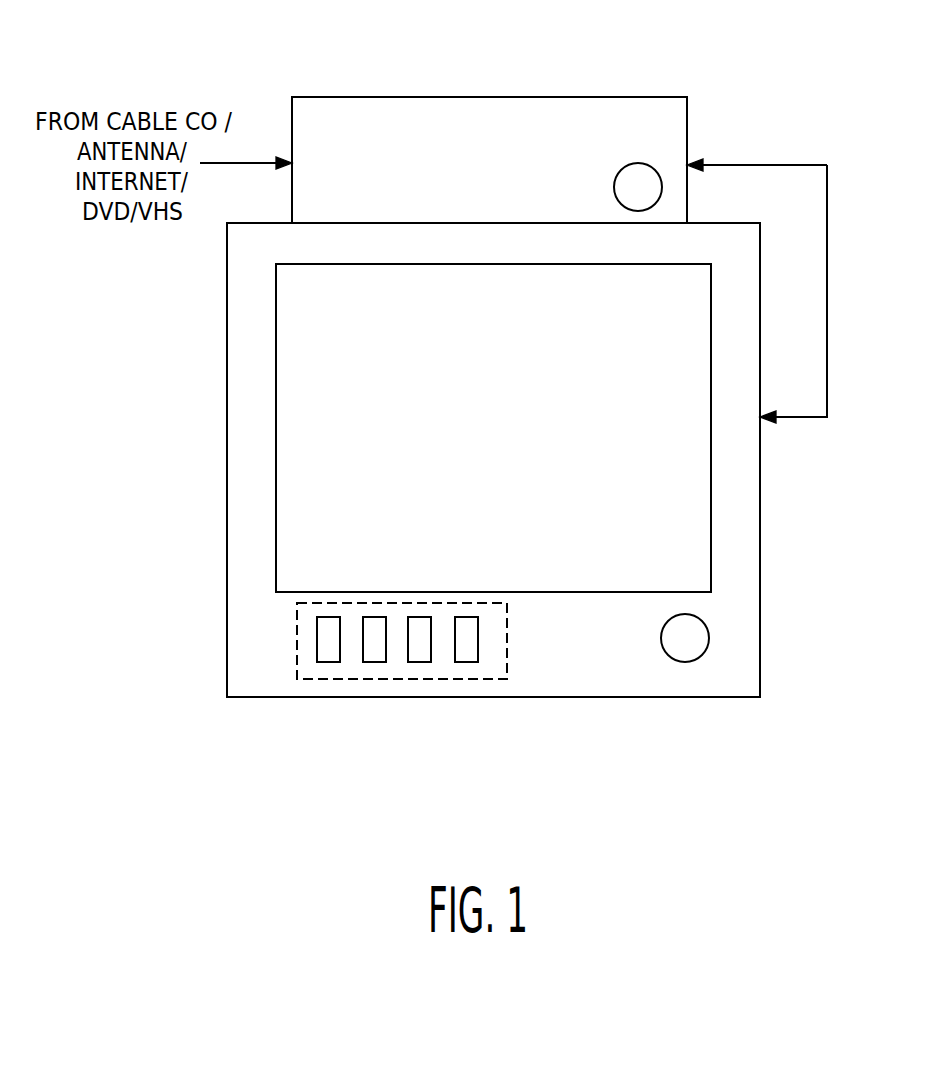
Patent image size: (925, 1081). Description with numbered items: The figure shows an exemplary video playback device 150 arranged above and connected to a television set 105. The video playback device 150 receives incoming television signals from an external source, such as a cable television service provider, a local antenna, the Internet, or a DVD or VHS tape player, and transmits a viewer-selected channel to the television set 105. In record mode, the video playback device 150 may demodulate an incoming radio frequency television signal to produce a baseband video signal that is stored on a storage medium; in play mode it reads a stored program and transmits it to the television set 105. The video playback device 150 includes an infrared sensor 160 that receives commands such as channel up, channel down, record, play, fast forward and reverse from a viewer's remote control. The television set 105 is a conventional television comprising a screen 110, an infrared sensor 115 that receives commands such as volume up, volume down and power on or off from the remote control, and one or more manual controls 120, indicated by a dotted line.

The television set 105 is at (761, 497).
The screen 110 is at (711, 557).
The infrared (IR) sensor 115 is at (693, 661).
The manual controls 120 is at (402, 680).
The video playback device 150 is at (362, 97).
The infrared (IR) sensor 160 is at (662, 185).